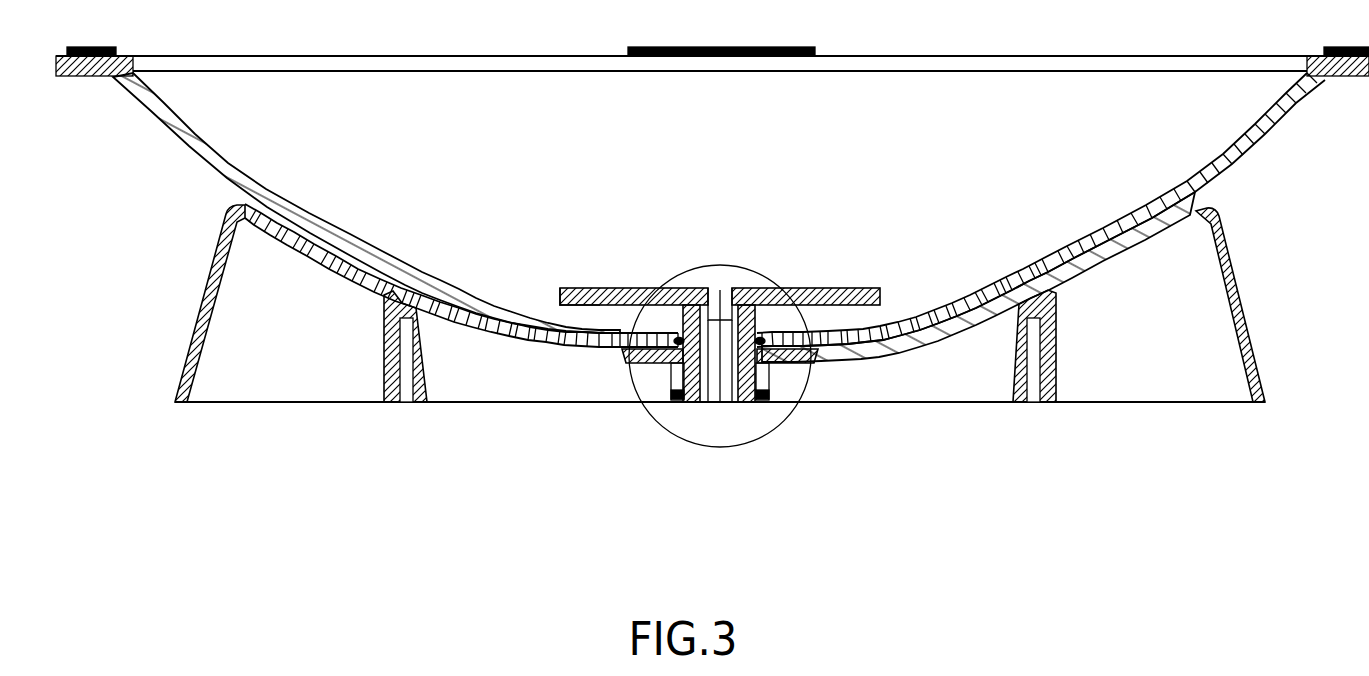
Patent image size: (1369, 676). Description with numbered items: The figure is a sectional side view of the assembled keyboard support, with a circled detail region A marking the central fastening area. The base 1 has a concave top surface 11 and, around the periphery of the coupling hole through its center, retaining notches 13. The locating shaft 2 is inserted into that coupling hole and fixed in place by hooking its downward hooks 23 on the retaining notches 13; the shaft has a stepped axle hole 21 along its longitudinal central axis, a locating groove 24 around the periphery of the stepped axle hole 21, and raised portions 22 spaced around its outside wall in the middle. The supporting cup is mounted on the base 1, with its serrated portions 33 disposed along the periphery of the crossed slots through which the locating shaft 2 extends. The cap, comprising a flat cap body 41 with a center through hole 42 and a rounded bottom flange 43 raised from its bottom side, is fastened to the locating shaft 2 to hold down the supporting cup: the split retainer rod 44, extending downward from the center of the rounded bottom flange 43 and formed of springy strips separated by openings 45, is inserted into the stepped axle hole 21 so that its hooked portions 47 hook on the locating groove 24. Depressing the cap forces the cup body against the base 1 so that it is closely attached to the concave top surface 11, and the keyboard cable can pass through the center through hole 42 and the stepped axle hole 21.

The base 1 is at (198, 347).
The locating shaft 2 is at (690, 297).
The concave top surface 11 is at (553, 345).
The retaining notches 13 is at (683, 393).
The stepped axle hole 21 is at (750, 385).
The raised portions 22 is at (782, 368).
The downward hooks 23 is at (762, 375).
The locating groove 24 is at (797, 290).
The serrated portions 33 is at (530, 322).
The flat cap body 41 is at (635, 290).
The center through hole 42 is at (723, 300).
The rounded bottom flange 43 is at (567, 290).
The split retainer rod 44 is at (648, 358).
The openings 45 is at (735, 383).
The hooked portions 47 is at (698, 383).
The detail region A is at (713, 445).